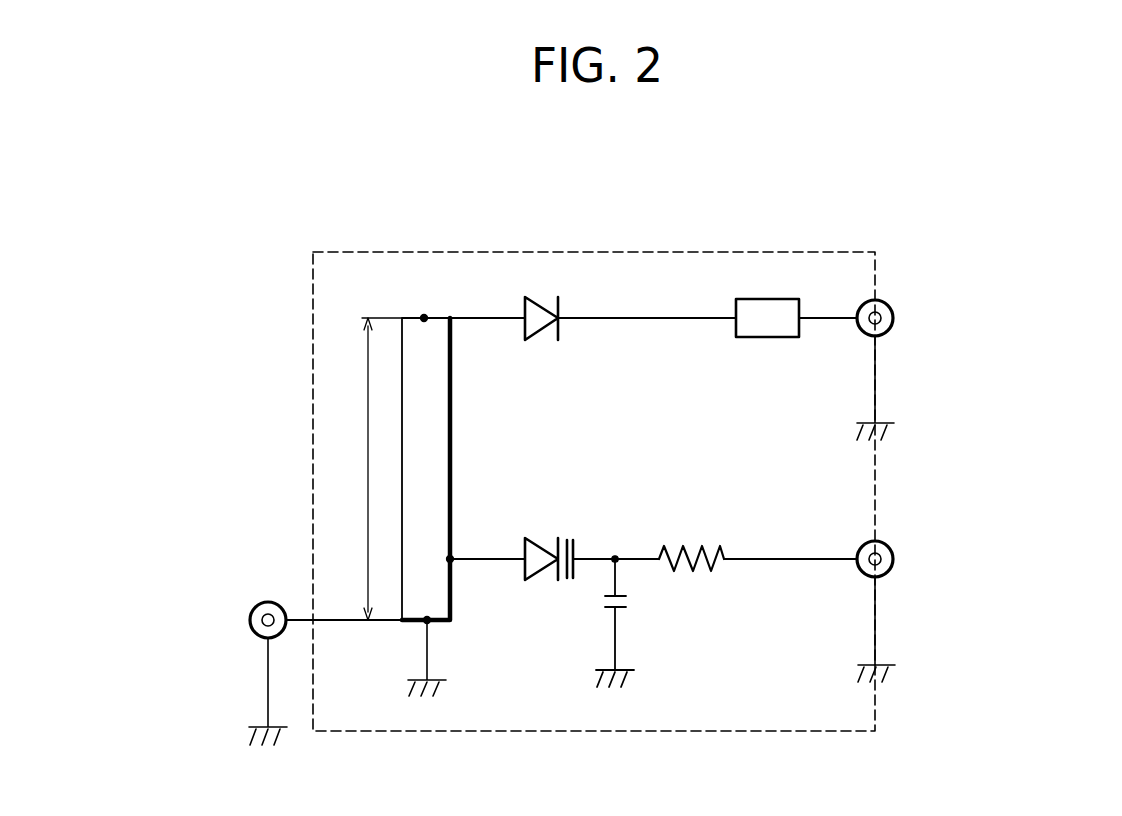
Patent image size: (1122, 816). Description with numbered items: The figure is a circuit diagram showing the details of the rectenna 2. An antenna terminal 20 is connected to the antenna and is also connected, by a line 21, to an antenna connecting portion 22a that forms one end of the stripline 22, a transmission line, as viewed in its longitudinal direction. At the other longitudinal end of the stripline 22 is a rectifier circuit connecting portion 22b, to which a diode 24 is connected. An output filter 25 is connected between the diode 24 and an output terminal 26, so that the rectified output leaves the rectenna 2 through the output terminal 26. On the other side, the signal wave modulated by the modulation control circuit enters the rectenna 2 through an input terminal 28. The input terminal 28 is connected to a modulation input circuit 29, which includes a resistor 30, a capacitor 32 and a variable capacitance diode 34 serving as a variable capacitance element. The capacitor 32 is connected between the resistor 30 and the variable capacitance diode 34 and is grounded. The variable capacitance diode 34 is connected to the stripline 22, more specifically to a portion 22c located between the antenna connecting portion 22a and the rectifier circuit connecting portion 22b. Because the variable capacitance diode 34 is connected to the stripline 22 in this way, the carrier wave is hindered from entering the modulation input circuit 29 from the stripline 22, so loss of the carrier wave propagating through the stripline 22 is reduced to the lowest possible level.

The rectenna 2 is at (665, 251).
The antenna terminal 20 is at (268, 600).
The line 21 is at (346, 624).
The stripline 22 is at (430, 430).
The antenna connecting portion 22a is at (430, 622).
The rectifier circuit connecting portion 22b is at (424, 315).
The portion 22c is at (451, 556).
The diode 24 is at (548, 281).
The output filter 25 is at (758, 326).
The output terminal 26 is at (862, 334).
The input terminal 28 is at (865, 577).
The modulation input circuit 29 is at (681, 660).
The resistor 30 is at (696, 531).
The capacitor 32 is at (648, 609).
The variable capacitance diode 34 is at (550, 524).